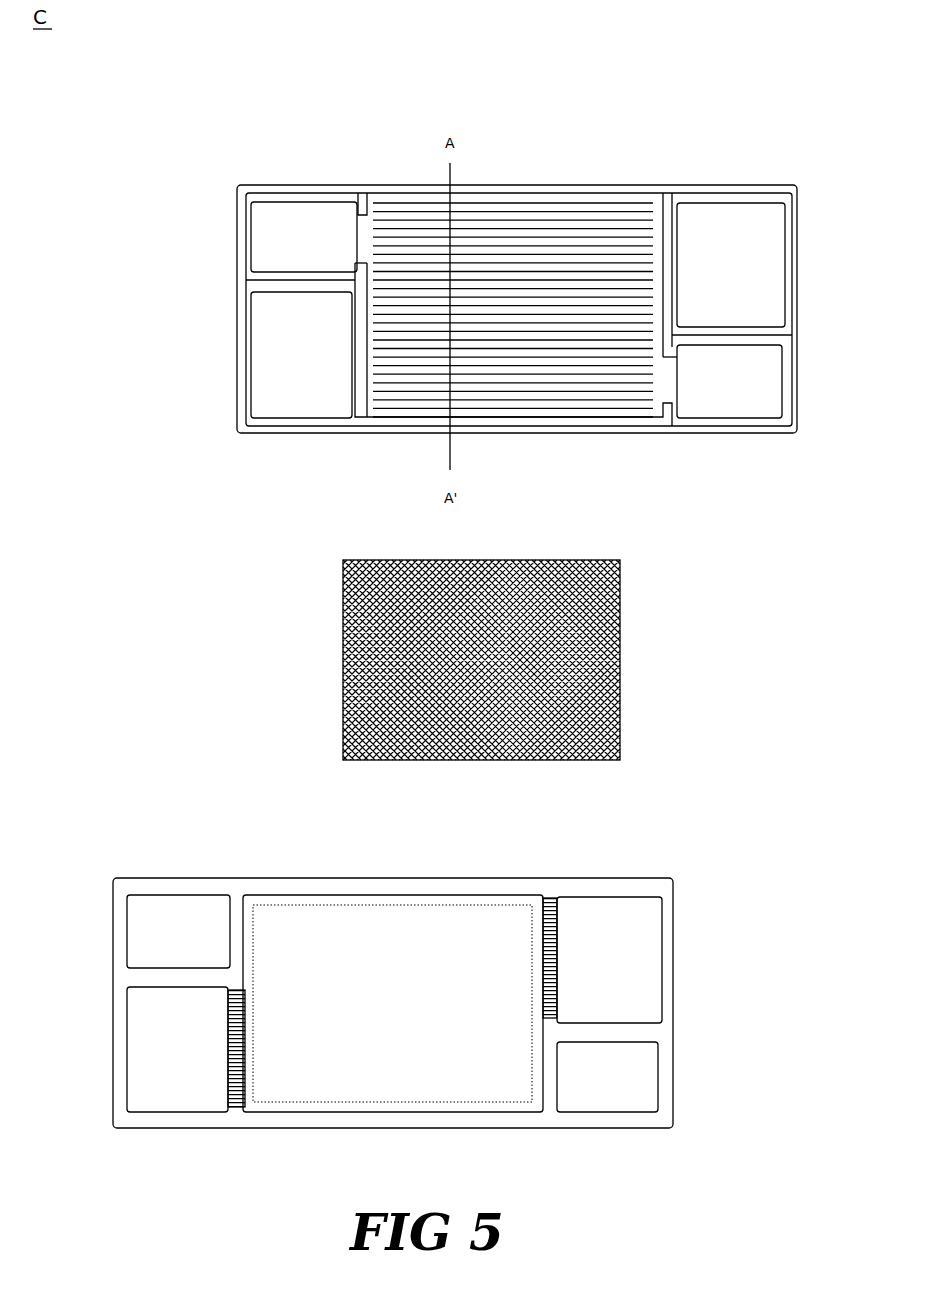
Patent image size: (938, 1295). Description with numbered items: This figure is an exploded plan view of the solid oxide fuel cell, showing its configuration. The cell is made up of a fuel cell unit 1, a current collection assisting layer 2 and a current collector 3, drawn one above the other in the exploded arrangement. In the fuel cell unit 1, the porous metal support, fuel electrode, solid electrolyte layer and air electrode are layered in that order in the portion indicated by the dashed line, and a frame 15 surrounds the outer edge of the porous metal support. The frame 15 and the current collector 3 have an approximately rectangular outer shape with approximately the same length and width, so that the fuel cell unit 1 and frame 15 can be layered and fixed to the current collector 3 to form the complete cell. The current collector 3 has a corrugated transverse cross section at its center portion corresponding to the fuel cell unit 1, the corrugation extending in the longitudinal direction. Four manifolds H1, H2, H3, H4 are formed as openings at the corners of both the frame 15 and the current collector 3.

The fuel cell unit 1 is at (428, 958).
The current collection assisting layer 2 is at (548, 657).
The current collector 3 is at (503, 280).
The frame 15 is at (643, 893).
The manifold H1 is at (272, 235).
The manifold H2 is at (288, 370).
The manifold H3 is at (742, 277).
The manifold H4 is at (737, 380).